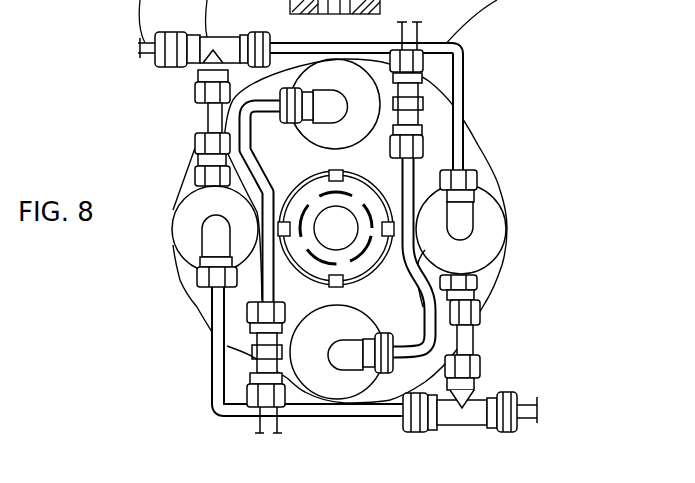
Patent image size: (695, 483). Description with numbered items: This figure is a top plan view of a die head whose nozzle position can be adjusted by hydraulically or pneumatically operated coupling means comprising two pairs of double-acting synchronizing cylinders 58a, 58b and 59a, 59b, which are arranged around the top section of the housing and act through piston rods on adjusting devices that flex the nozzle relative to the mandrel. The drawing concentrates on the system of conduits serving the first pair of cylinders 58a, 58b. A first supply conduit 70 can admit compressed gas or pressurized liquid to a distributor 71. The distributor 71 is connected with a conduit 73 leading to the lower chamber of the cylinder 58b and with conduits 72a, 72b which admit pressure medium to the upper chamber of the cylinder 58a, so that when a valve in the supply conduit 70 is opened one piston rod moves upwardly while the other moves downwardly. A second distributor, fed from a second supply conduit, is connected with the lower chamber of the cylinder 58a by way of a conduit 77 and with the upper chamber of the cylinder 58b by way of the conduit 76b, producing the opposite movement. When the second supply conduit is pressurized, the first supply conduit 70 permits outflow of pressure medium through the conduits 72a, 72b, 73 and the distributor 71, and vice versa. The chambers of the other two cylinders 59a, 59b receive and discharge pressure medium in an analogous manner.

The conduit 77 is at (220, 117).
The double-acting synchronizing cylinder 58a is at (183, 212).
The double-acting synchronizing cylinder 58b is at (487, 215).
The double-acting synchronizing cylinder 59a is at (318, 130).
The double-acting synchronizing cylinder 59b is at (352, 320).
The conduit 76b is at (458, 80).
The conduit 72a is at (343, 416).
The conduit 72b is at (217, 348).
The conduit 73 is at (468, 346).
The distributor 71 is at (467, 413).
The first supply conduit 70 is at (530, 405).